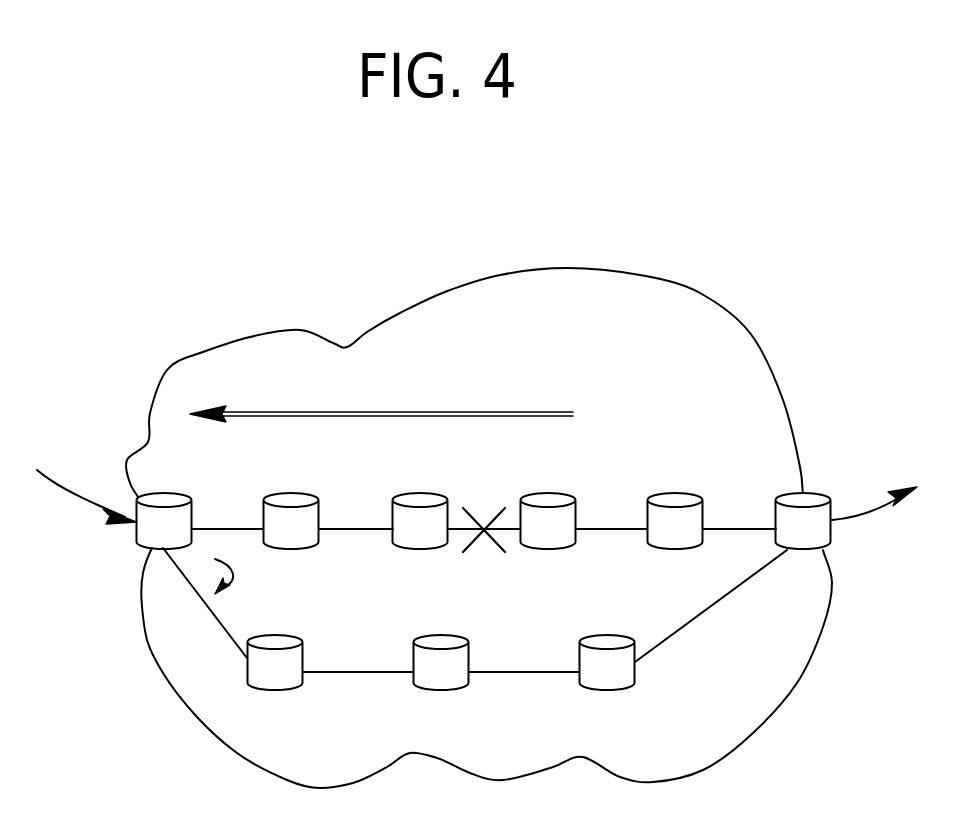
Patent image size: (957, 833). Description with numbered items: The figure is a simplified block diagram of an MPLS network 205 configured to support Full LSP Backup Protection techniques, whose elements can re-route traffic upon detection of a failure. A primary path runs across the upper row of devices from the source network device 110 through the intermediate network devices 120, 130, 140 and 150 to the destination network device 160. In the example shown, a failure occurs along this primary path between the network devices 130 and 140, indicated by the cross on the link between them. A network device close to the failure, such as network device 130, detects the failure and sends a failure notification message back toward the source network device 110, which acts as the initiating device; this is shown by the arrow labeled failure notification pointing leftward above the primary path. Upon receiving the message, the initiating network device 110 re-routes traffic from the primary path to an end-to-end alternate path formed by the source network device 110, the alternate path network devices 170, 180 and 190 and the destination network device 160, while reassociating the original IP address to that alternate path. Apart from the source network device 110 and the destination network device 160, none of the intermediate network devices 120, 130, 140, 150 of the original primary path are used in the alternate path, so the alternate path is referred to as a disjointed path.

The MPLS network 205 is at (260, 318).
The source network device 110 is at (181, 493).
The intermediate network device 120 is at (292, 493).
The network device 130 is at (430, 493).
The network device 140 is at (558, 494).
The intermediate network device 150 is at (687, 493).
The destination network device 160 is at (813, 493).
The alternate path network device 170 is at (283, 690).
The alternate path network device 180 is at (448, 692).
The alternate path network device 190 is at (612, 692).